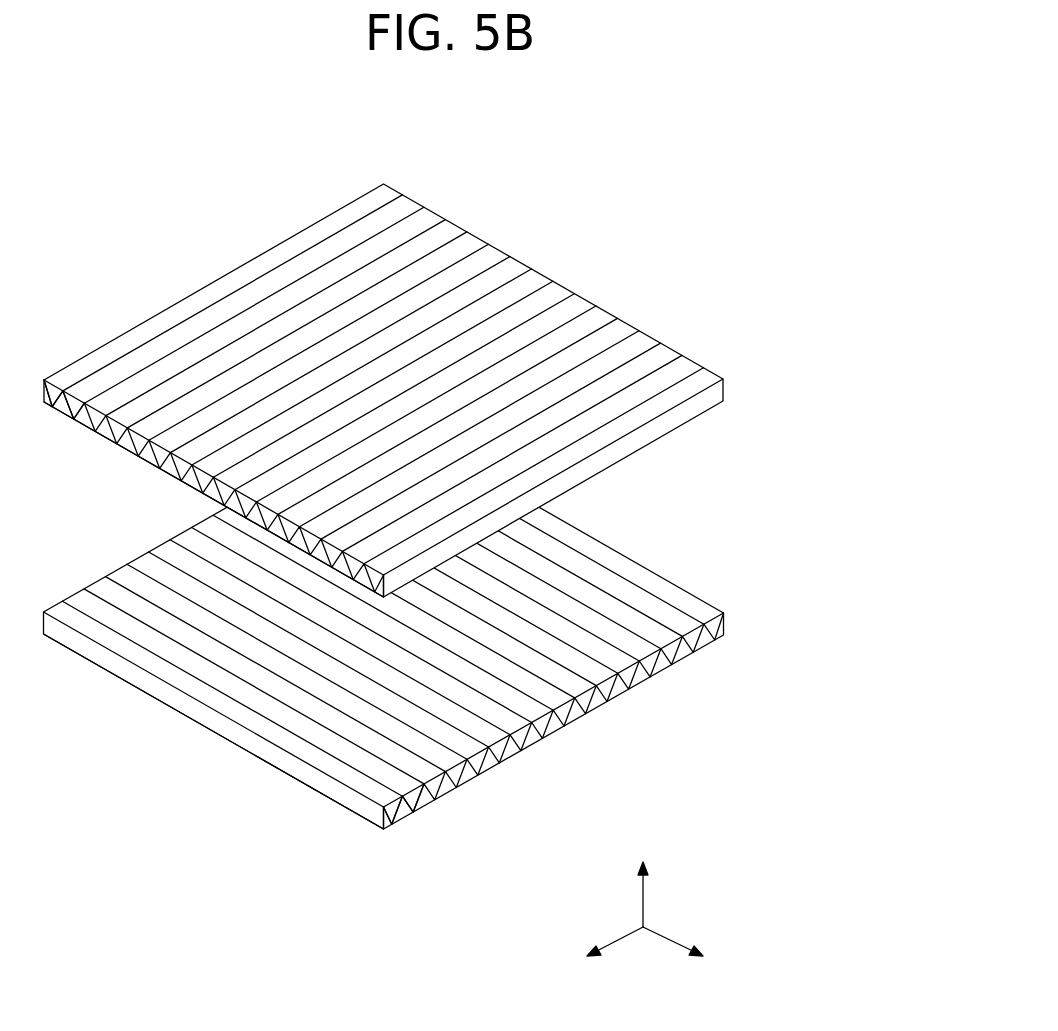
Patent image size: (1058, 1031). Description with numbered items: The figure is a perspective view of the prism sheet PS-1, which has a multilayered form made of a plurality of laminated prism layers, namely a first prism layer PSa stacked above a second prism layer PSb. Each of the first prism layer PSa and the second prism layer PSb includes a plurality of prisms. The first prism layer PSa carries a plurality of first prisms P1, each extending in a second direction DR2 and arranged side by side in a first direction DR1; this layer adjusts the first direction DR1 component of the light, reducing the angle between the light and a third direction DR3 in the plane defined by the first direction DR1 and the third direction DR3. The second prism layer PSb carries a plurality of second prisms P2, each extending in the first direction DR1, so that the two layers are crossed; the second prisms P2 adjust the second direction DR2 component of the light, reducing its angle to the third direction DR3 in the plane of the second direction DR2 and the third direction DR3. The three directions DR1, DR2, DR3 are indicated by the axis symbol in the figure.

The prism sheet PS-1 is at (477, 525).
The first prism layer PSa is at (742, 387).
The second prism layer PSb is at (742, 620).
The first prism P1 is at (72, 405).
The second prism P2 is at (397, 803).
The first direction DR1 is at (694, 951).
The second direction DR2 is at (595, 951).
The third direction DR3 is at (643, 881).